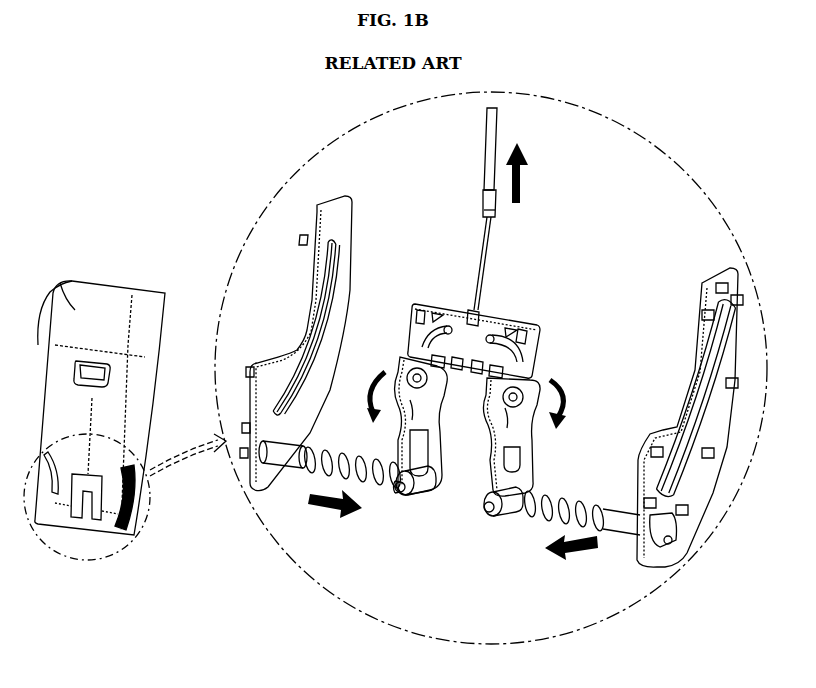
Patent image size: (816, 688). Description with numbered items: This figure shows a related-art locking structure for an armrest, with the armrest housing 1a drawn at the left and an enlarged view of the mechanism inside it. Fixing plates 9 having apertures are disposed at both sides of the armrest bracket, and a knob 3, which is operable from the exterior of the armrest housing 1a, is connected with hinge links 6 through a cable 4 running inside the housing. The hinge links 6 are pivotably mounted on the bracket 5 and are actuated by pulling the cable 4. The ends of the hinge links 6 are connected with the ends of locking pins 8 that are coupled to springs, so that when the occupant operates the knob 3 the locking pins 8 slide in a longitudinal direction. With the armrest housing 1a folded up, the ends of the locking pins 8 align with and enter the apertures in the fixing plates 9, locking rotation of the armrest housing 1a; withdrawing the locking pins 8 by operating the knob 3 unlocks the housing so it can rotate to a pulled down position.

The armrest housing 1a is at (70, 310).
The knob 3 is at (110, 381).
The cable 4 is at (92, 422).
The bracket 5 is at (494, 327).
The hinge links 6 is at (518, 335).
The locking pins 8 is at (380, 490).
The fixing plates 9 is at (335, 210).